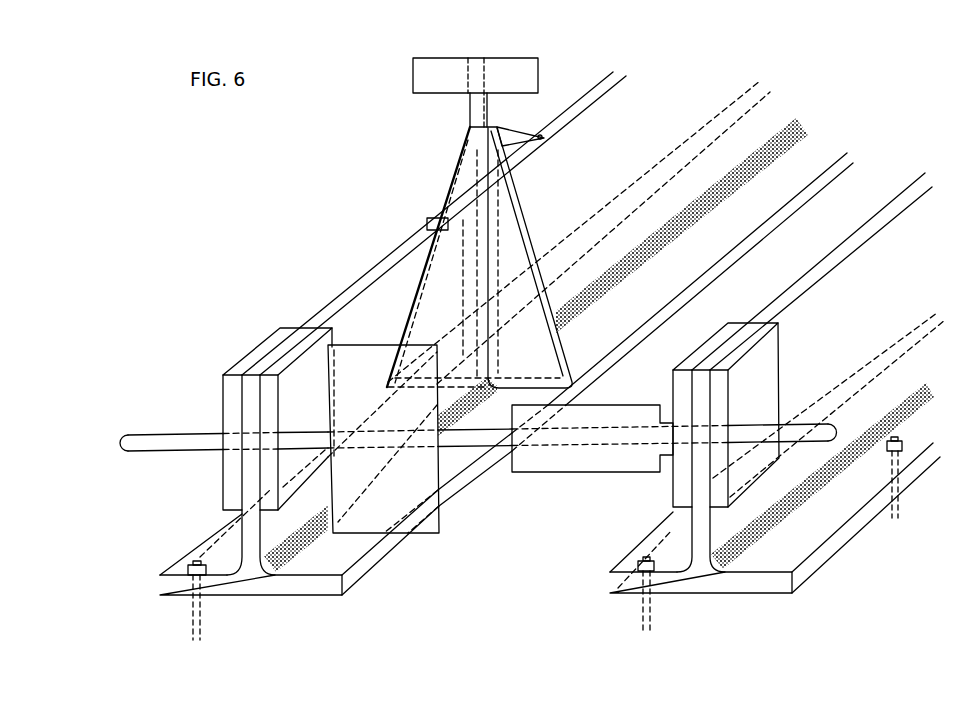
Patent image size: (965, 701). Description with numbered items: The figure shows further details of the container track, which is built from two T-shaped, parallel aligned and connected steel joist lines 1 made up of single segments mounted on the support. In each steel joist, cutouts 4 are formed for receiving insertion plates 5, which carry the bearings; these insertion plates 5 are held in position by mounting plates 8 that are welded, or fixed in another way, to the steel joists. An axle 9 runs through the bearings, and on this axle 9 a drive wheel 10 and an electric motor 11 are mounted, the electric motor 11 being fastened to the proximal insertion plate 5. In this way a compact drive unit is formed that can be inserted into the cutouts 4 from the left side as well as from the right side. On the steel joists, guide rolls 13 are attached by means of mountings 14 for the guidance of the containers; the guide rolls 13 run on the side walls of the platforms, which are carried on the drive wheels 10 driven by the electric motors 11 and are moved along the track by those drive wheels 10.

The steel joist lines 1 is at (253, 575).
The cutouts 4 is at (652, 571).
The insertion plates 5 is at (733, 340).
The mounting plates 8 is at (314, 330).
The axle 9 is at (145, 443).
The drive wheel 10 is at (439, 532).
The electric motor 11 is at (591, 461).
The guide rolls 13 is at (518, 77).
The guide roll mountings 14 is at (482, 163).